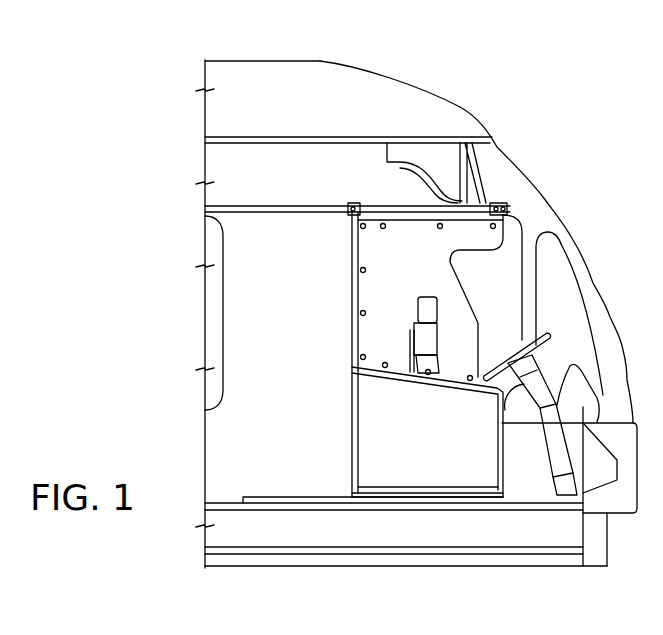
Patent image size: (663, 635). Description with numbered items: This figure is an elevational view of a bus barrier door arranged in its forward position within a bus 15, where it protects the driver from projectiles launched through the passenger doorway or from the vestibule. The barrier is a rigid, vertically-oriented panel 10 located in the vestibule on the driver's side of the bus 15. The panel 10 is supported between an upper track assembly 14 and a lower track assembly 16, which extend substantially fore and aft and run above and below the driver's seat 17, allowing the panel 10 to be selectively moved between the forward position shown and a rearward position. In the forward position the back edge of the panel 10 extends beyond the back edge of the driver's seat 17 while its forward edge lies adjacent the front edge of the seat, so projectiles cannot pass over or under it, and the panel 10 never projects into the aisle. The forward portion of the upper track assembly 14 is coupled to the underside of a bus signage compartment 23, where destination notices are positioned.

The panel 10 is at (433, 445).
The upper track assembly 14 is at (368, 205).
The bus 15 is at (458, 107).
The lower track assembly 16 is at (375, 505).
The driver's seat 17 is at (427, 297).
The bus signage compartment 23 is at (513, 187).